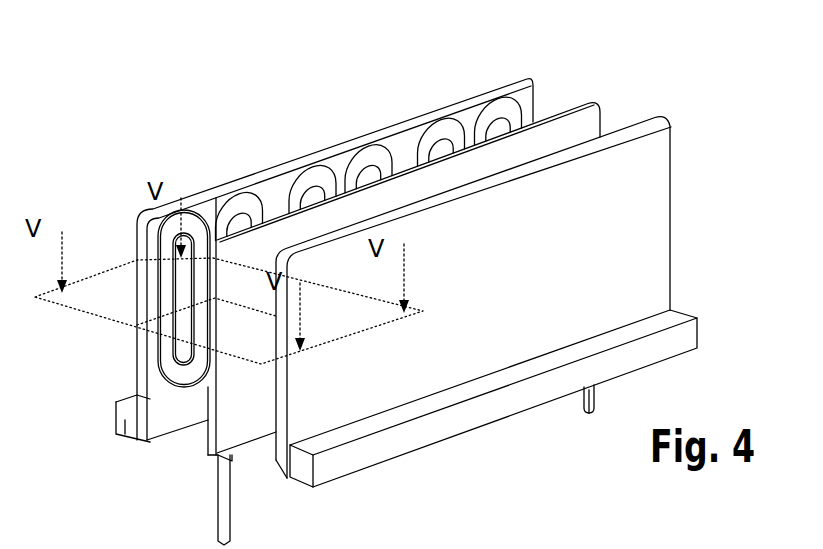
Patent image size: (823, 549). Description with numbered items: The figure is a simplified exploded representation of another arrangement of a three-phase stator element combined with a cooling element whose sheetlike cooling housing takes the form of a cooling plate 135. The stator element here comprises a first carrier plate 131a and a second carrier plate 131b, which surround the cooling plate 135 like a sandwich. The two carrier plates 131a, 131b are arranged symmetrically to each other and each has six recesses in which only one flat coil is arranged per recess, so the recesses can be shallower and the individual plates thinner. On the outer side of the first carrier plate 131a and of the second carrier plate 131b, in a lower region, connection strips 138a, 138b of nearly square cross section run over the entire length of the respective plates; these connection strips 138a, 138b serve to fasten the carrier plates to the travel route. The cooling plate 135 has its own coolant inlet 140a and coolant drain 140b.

The first carrier plate 131a is at (266, 186).
The second carrier plate 131b is at (407, 242).
The cooling plate 135 is at (550, 138).
The connection strip 138a is at (127, 443).
The connection strip 138b is at (276, 461).
The coolant inlet 140a is at (228, 510).
The coolant drain 140b is at (590, 395).